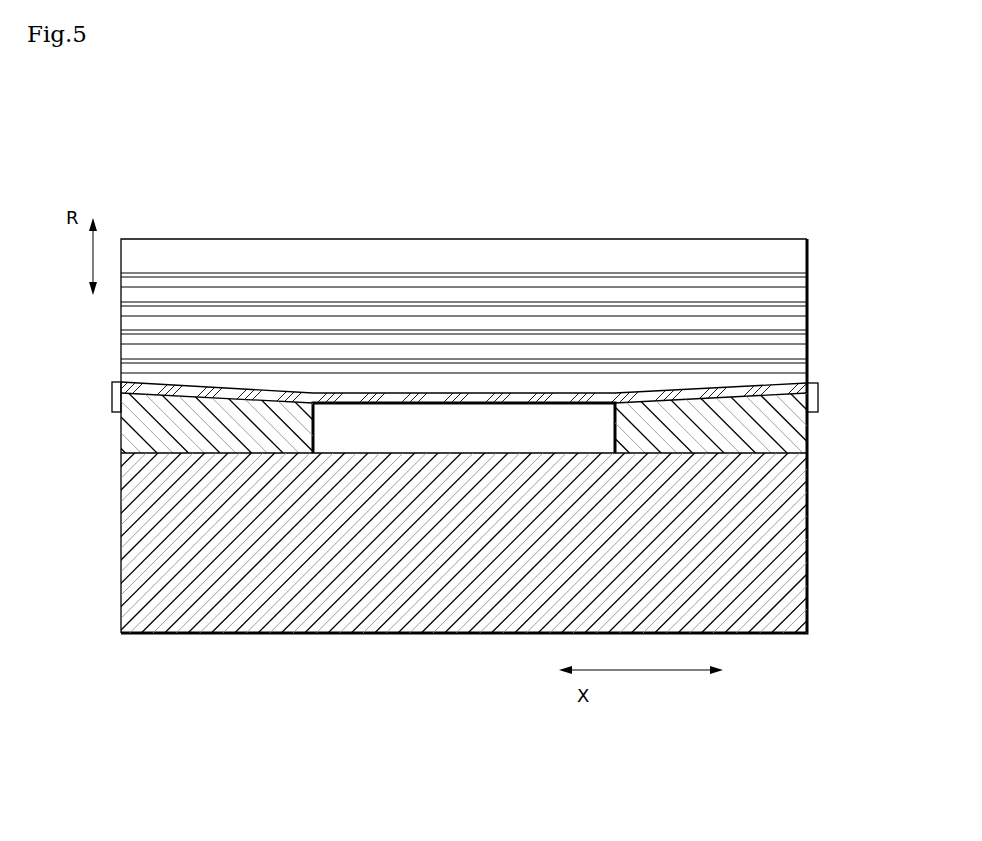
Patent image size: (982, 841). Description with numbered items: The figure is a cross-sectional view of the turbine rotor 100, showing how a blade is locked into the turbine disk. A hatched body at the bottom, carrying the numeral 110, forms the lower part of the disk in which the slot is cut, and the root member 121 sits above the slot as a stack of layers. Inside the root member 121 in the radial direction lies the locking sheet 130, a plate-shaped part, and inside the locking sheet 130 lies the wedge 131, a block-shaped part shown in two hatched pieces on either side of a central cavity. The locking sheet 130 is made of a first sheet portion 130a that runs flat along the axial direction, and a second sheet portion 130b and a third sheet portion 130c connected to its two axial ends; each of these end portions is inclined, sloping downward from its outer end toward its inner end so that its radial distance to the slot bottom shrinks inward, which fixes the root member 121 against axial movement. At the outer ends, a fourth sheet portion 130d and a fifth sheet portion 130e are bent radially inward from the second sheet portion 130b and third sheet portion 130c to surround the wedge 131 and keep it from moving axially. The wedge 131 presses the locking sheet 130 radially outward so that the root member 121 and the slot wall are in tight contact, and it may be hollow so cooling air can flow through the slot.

The turbine rotor 100 is at (148, 124).
The substrate 110 is at (432, 592).
The root member 121 is at (390, 260).
The locking sheet 130 is at (372, 422).
The first sheet portion 130a is at (558, 393).
The second sheet portion 130b is at (237, 393).
The third sheet portion 130c is at (697, 397).
The fourth sheet portion 130d is at (113, 395).
The fifth sheet portion 130e is at (816, 400).
The wedge 131 is at (230, 428).